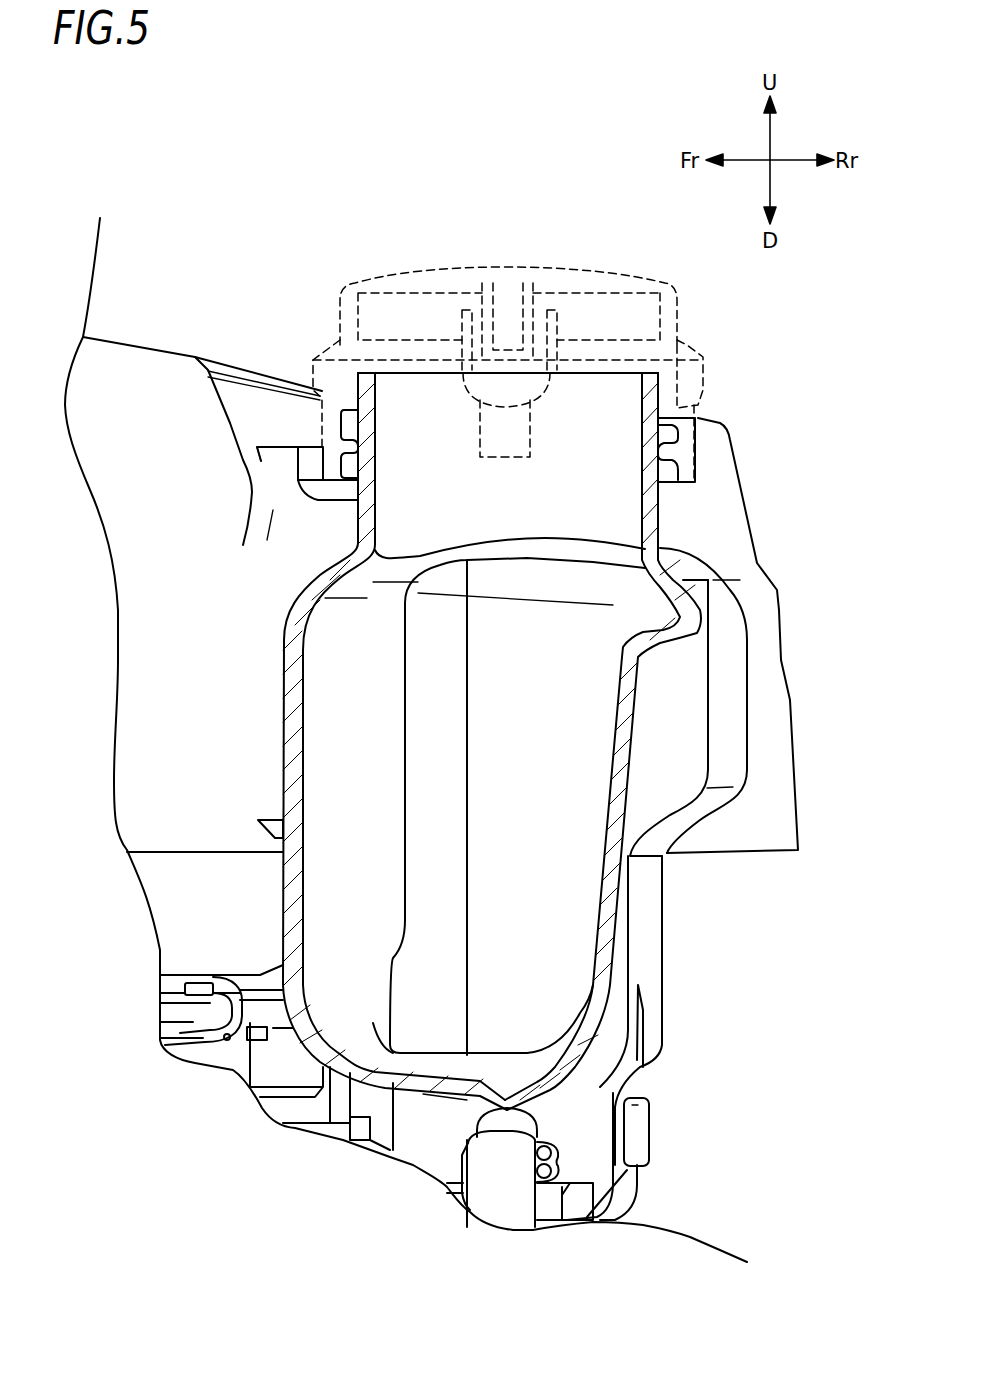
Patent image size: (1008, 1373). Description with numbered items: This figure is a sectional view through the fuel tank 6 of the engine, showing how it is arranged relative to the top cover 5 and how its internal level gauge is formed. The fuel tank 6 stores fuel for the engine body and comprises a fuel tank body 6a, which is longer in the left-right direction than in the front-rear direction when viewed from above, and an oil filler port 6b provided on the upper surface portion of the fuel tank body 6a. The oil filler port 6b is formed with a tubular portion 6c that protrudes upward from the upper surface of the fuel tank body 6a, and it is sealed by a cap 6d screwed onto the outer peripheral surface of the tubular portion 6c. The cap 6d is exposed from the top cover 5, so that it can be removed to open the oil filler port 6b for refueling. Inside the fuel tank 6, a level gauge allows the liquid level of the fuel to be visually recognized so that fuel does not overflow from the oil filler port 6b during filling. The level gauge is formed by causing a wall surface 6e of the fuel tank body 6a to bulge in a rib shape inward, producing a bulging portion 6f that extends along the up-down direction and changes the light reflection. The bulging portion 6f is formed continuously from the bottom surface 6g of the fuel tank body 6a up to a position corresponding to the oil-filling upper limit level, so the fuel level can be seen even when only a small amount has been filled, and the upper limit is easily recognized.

The top cover 5 is at (150, 348).
The fuel tank 6 is at (272, 748).
The fuel tank body 6a is at (283, 660).
The oil filler port 6b is at (642, 415).
The tubular portion 6c is at (307, 455).
The cap 6d is at (538, 268).
The wall surface 6e is at (630, 782).
The bulging portion 6f is at (620, 710).
The bottom surface 6g is at (543, 1078).